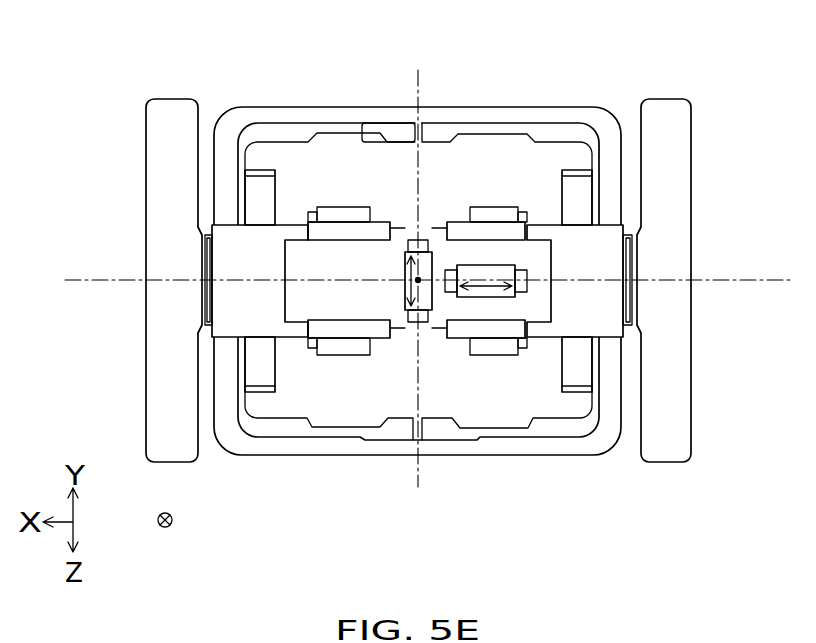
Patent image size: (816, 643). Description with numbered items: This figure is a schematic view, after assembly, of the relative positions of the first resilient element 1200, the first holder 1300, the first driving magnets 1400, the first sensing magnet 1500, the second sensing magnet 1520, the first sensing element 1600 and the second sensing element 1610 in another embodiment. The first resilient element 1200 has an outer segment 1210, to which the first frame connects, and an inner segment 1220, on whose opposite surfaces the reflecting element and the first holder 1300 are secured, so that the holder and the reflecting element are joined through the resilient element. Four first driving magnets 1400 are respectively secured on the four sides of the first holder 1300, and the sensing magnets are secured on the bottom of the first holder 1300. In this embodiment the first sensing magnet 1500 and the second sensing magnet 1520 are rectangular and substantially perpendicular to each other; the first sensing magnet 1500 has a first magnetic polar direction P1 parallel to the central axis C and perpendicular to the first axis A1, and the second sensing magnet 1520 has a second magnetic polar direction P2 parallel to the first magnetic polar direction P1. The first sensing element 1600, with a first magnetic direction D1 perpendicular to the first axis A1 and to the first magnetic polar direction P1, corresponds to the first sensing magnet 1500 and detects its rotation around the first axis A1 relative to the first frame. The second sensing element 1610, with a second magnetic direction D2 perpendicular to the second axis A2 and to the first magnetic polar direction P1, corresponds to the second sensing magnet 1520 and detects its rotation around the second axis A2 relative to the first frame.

The first resilient element 1200 is at (703, 87).
The outer segment 1210 is at (684, 157).
The inner segment 1220 is at (425, 132).
The first holder 1300 is at (565, 420).
The first driving magnet 1400 is at (358, 208).
The first sensing magnet 1500 is at (407, 247).
The second sensing magnet 1520 is at (522, 285).
The first sensing element 1600 is at (516, 282).
The second sensing element 1610 is at (498, 272).
The first axis A1 is at (411, 282).
The second axis A2 is at (420, 262).
The central axis C is at (420, 279).
The first magnetic direction D1 is at (406, 287).
The second magnetic direction D2 is at (485, 297).
The first magnetic polar direction P1 is at (150, 538).
The second magnetic polar direction P2 is at (194, 548).